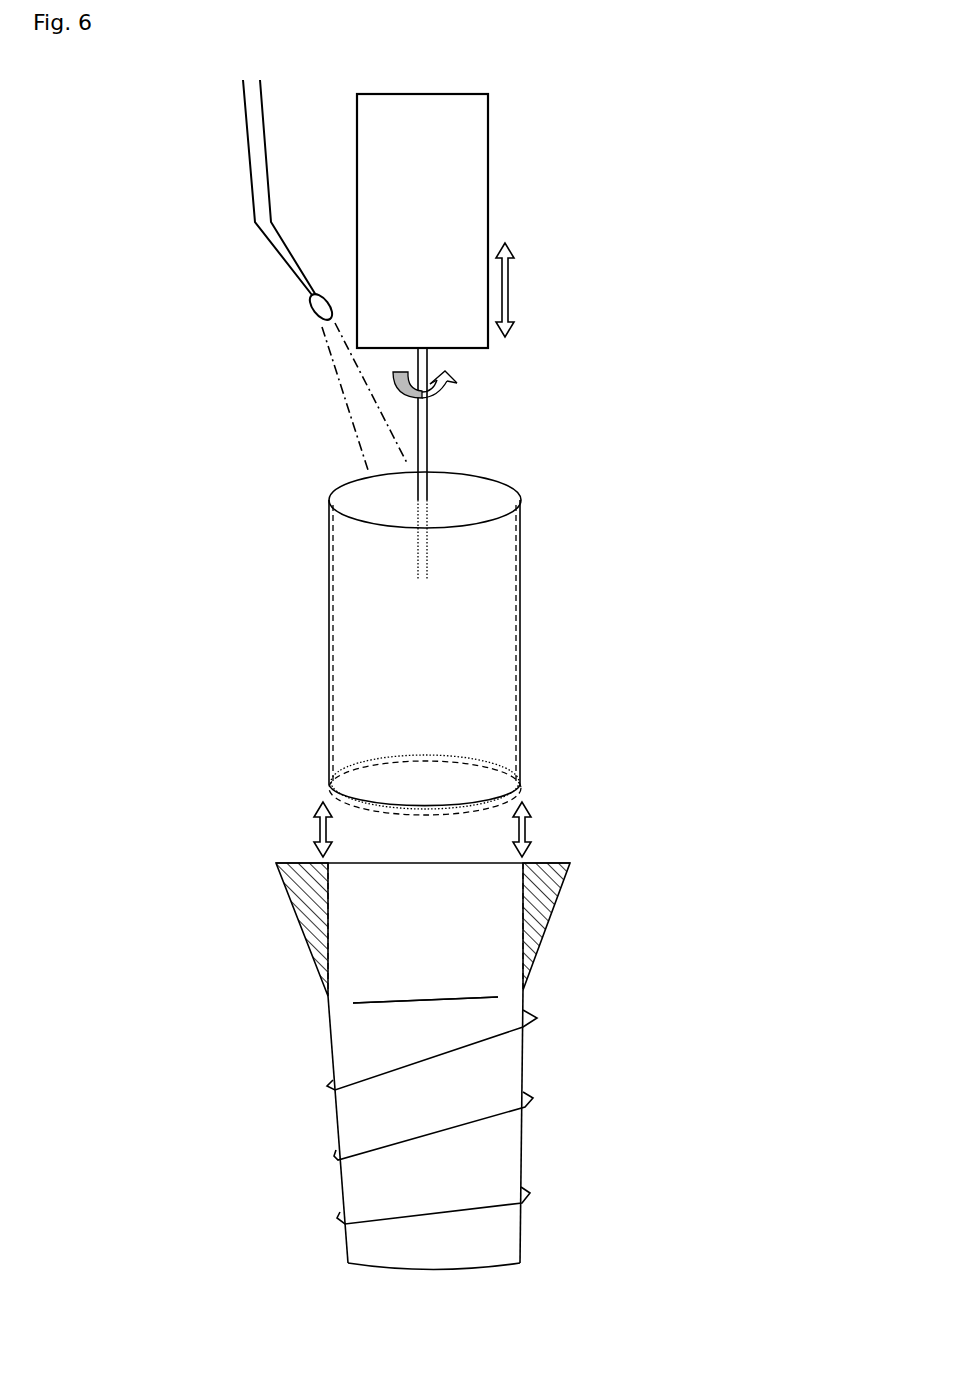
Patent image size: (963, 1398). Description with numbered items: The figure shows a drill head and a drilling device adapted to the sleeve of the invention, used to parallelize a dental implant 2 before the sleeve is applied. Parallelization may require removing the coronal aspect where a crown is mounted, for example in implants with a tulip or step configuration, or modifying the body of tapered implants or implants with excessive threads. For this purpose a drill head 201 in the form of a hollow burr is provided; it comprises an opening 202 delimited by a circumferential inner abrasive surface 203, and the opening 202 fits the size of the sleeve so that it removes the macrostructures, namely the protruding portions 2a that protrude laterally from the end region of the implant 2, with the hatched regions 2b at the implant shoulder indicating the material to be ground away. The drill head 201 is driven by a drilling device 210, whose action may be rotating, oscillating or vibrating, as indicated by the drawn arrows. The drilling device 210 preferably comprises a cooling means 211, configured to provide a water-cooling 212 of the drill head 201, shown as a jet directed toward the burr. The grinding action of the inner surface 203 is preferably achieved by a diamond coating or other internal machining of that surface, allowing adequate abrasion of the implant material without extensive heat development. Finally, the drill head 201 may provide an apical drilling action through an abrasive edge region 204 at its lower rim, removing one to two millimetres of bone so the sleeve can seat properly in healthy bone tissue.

The dental implant 2 is at (523, 1147).
The protruding portions 2a is at (457, 915).
The implant shoulder / collar region 2b is at (315, 886).
The drill head 201 is at (468, 500).
The opening 202 is at (468, 713).
The circumferential inner abrasive surface 203 is at (518, 652).
The abrasive edge region 204 is at (457, 813).
The drilling device 210 is at (468, 207).
The cooling means 211 is at (260, 210).
The water-cooling 212 is at (353, 399).